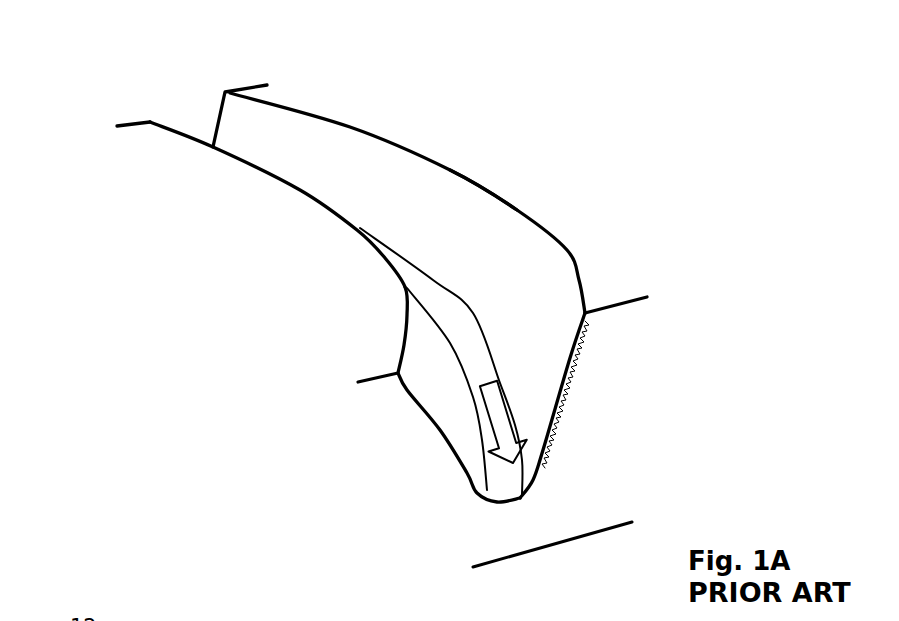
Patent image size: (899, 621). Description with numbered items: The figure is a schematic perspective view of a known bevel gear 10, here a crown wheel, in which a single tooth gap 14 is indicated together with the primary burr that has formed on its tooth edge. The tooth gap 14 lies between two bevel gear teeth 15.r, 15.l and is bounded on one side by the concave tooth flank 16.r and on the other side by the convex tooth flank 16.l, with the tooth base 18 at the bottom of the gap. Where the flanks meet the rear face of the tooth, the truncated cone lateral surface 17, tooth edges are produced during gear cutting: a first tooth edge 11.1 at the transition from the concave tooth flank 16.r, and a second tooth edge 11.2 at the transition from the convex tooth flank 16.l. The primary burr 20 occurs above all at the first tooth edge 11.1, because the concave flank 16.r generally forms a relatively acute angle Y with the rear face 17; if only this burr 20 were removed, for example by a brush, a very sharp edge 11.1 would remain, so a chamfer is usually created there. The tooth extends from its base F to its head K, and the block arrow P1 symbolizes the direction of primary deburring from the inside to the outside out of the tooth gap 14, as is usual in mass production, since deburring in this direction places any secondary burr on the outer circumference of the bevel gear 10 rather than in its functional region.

The bevel gear 10 is at (53, 34).
The tooth gap 14 is at (187, 106).
The bevel gear tooth 15.l is at (218, 172).
The bevel gear tooth 15.r is at (475, 148).
The convex tooth flank 16.l is at (413, 360).
The concave tooth flank 16.r is at (372, 155).
The first tooth edge 11.1 is at (570, 358).
The second tooth edge 11.2 is at (412, 390).
The primary burr 20 is at (573, 383).
The head K is at (616, 289).
The angle Y is at (604, 302).
The block arrow P1 is at (497, 411).
The base F is at (528, 513).
The tooth base 18 is at (517, 490).
The truncated cone lateral surface 17 is at (578, 508).